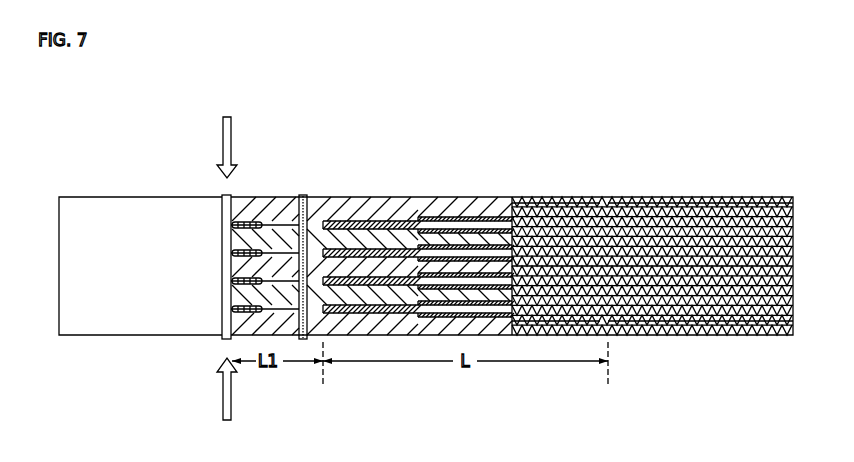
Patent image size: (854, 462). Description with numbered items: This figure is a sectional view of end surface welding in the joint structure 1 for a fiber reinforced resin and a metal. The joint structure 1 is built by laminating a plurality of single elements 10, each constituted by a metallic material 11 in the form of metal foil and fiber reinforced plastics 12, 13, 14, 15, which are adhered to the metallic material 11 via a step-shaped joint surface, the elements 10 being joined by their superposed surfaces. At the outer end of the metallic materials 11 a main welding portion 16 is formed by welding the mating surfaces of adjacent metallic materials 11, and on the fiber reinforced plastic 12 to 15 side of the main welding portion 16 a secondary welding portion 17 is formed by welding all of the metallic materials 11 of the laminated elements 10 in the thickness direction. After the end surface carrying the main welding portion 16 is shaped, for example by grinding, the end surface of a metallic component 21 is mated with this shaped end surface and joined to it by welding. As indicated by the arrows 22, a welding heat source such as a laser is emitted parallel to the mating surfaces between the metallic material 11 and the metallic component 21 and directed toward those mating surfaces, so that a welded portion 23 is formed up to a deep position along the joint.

The joint structure 1 is at (450, 173).
The single element 10 is at (375, 194).
The metallic material 11 is at (340, 195).
The fiber reinforced plastic 12 is at (665, 198).
The fiber reinforced plastic 13 is at (697, 208).
The fiber reinforced plastic 14 is at (728, 213).
The fiber reinforced plastic 15 is at (760, 222).
The main welding portion 16 is at (222, 309).
The secondary welding portion 17 is at (303, 195).
The metallic component 21 is at (89, 212).
The arrows 22 is at (231, 140).
The welded portion 23 is at (221, 197).